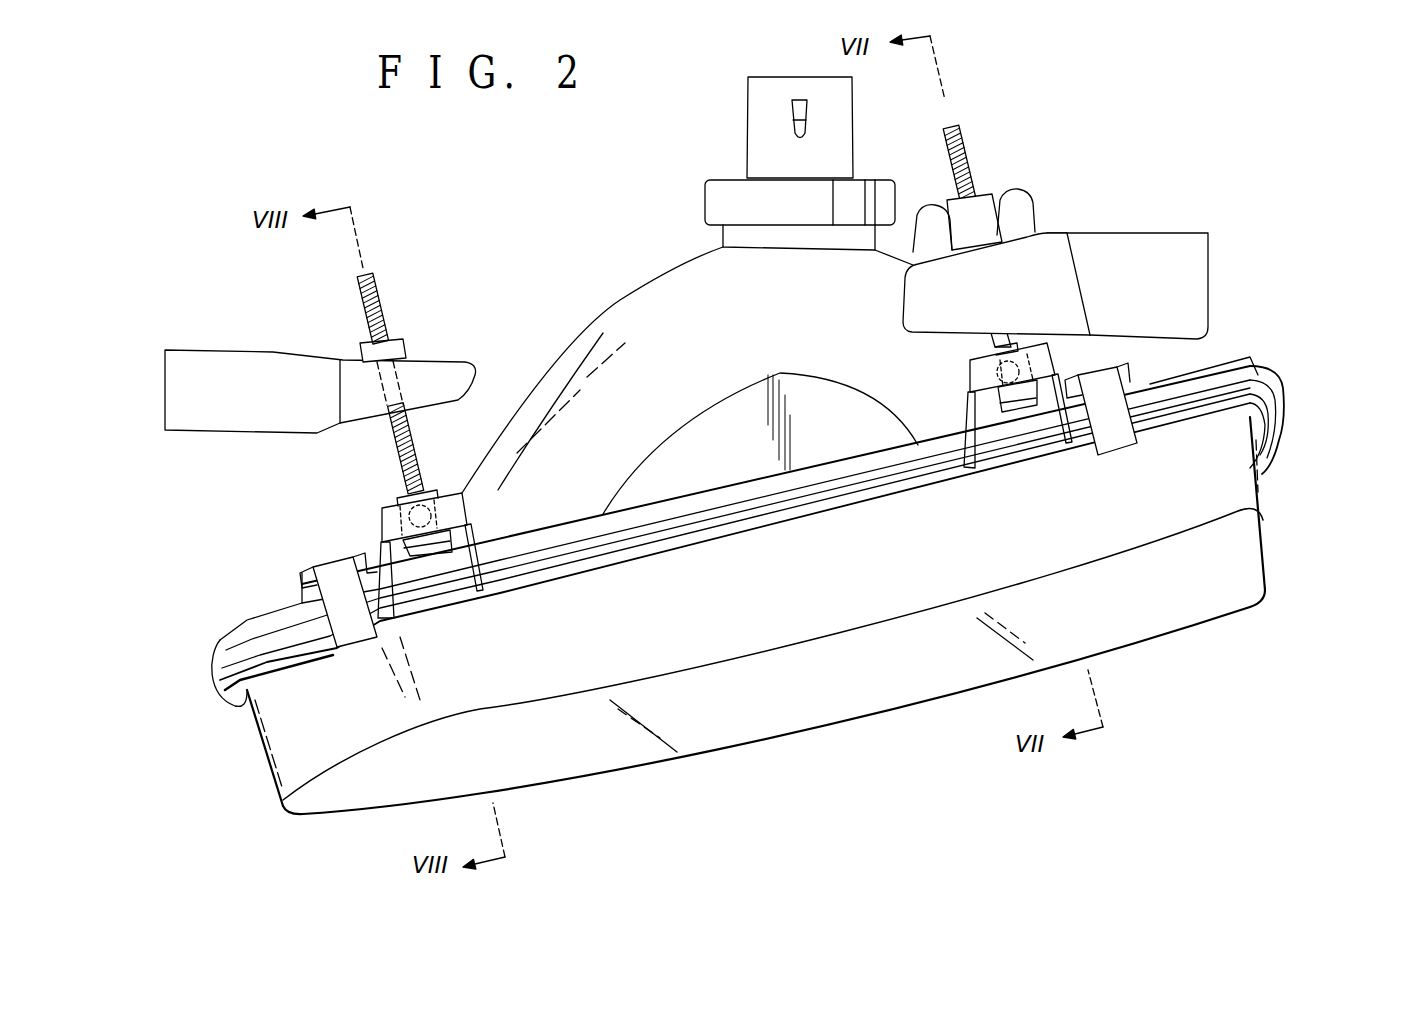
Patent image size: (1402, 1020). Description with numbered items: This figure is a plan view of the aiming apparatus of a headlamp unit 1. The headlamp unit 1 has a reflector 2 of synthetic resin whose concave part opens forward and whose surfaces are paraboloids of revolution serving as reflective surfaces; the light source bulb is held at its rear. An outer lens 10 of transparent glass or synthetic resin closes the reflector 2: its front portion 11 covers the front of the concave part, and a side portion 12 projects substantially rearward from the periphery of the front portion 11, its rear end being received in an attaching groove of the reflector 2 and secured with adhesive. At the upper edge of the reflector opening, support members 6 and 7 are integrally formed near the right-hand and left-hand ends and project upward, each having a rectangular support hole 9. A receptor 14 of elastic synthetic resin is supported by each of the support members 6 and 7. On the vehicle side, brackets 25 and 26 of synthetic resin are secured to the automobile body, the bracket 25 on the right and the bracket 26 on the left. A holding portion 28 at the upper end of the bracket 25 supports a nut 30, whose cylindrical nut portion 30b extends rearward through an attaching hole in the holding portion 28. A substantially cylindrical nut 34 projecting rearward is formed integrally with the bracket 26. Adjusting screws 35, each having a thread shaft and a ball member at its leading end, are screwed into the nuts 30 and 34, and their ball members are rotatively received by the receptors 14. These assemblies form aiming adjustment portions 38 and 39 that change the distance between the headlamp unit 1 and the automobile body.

The headlamp unit 1 is at (1287, 633).
The reflector 2 is at (253, 623).
The support member 6 is at (970, 372).
The support member 7 is at (382, 515).
The support hole 9 is at (440, 513).
The outer lens 10 is at (880, 700).
The front portion 11 is at (1167, 608).
The side portion 12 is at (747, 618).
The receptor 14 is at (430, 553).
The bracket 25 is at (1097, 250).
The bracket 26 is at (200, 362).
The holding portion 28 is at (908, 290).
The nut 30 is at (988, 190).
The nut portion 30b is at (993, 222).
The nut 34 is at (397, 347).
The adjusting screw 35 is at (427, 443).
The aiming adjustment portion 38 is at (931, 345).
The aiming adjustment portion 39 is at (470, 451).